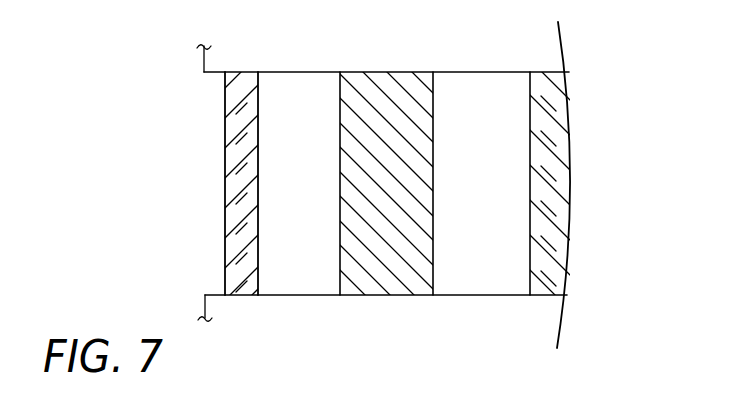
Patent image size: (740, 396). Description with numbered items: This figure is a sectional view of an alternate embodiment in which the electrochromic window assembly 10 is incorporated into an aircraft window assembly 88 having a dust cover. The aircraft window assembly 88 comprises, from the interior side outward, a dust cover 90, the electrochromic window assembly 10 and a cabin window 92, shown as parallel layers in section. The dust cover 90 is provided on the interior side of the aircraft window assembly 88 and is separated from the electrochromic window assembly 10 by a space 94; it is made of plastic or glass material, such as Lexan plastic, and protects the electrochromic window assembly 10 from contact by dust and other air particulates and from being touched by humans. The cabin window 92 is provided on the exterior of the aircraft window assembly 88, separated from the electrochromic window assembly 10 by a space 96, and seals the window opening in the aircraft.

The aircraft window assembly 88 is at (157, 122).
The dust cover 90 is at (240, 275).
The space 94 is at (300, 262).
The electrochromic window assembly 10 is at (385, 273).
The space 96 is at (490, 262).
The cabin window 92 is at (562, 252).